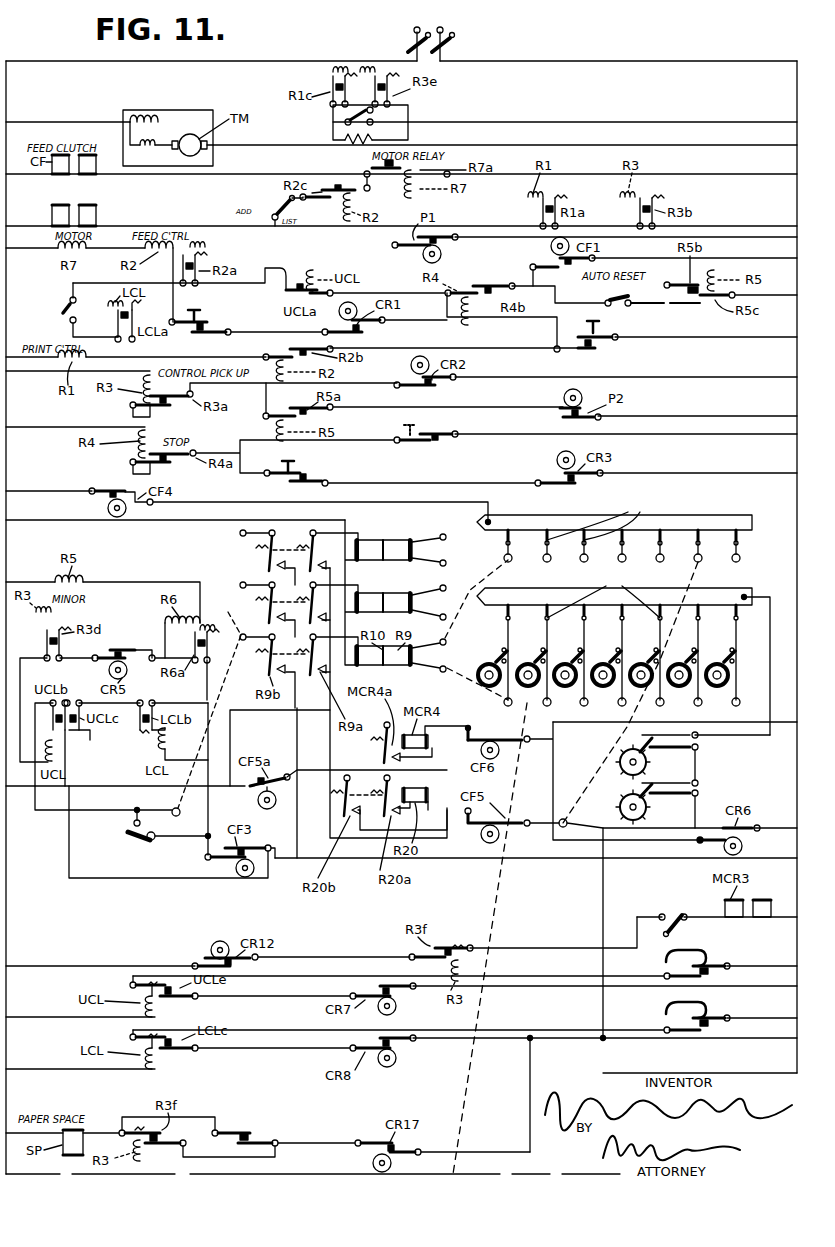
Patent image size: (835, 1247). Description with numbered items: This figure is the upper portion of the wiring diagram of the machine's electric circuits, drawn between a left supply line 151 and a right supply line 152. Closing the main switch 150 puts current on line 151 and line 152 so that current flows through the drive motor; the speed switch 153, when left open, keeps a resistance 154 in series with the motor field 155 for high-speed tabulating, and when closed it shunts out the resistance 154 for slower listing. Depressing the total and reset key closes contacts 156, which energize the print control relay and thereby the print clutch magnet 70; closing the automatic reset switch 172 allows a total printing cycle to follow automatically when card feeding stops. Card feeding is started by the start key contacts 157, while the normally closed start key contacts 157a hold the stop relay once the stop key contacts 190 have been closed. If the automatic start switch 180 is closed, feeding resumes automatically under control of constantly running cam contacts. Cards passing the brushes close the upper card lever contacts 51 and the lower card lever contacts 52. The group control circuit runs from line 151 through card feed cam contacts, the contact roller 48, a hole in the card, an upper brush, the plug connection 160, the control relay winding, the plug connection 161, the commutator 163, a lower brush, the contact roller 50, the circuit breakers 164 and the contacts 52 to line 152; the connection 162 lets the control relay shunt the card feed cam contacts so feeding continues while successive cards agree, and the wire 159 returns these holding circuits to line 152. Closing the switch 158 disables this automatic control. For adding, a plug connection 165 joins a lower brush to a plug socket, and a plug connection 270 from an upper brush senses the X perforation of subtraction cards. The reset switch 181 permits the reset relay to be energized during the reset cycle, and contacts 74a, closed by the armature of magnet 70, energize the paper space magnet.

The line 151 is at (6, 92).
The line 152 is at (797, 95).
The motor field 155 is at (132, 121).
The switch 150 is at (452, 42).
The switch 153 is at (409, 112).
The resistance 154 is at (409, 137).
The print clutch magnet 70 is at (96, 215).
The automatic start switch 180 is at (66, 310).
The start key contacts 157 is at (213, 327).
The start key contacts 157a is at (446, 445).
The contacts 156 is at (600, 343).
The automatic reset switch 172 is at (604, 305).
The stop key contacts 190 is at (298, 485).
The contact roller 48 is at (712, 520).
The contact roller 50 is at (730, 593).
The plug connection 160 is at (478, 580).
The plug connection 161 is at (465, 690).
The connection 162 is at (209, 701).
The commutator 163 is at (506, 658).
The circuit breakers 164 is at (673, 783).
The plug connection 165 is at (490, 893).
The plug connection 270 is at (630, 729).
The switch 158 is at (140, 845).
The wire 159 is at (67, 850).
The reset switch 181 is at (670, 915).
The contacts 51 is at (727, 963).
The contacts 52 is at (724, 1016).
The contacts 74a is at (238, 1145).